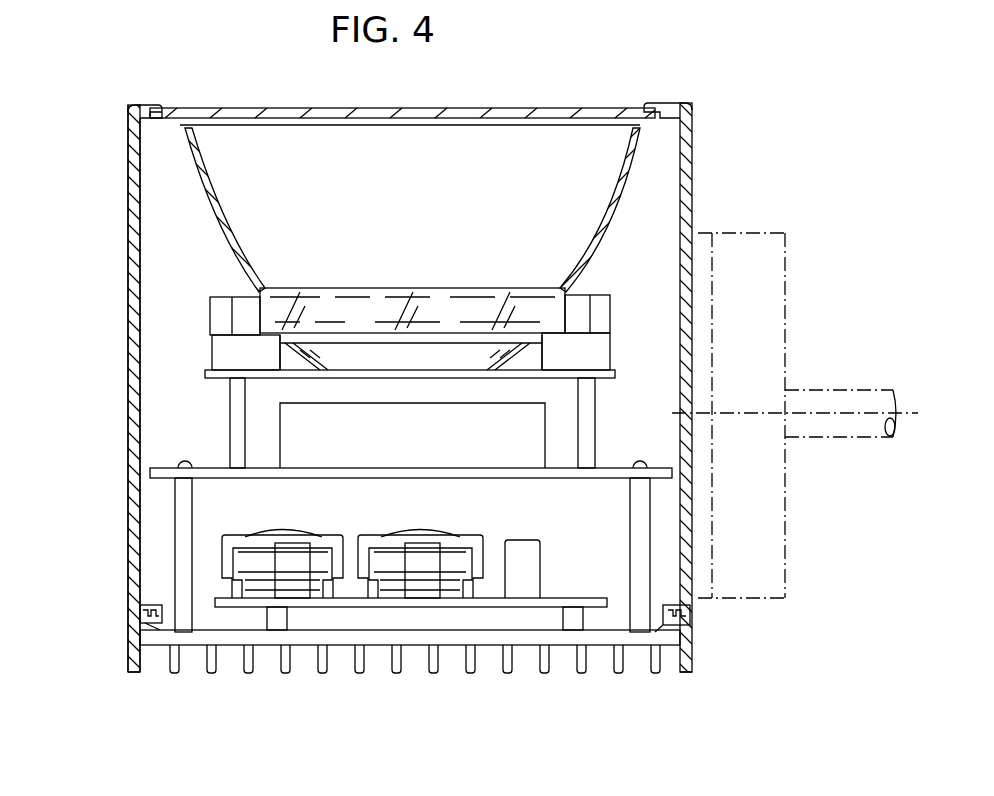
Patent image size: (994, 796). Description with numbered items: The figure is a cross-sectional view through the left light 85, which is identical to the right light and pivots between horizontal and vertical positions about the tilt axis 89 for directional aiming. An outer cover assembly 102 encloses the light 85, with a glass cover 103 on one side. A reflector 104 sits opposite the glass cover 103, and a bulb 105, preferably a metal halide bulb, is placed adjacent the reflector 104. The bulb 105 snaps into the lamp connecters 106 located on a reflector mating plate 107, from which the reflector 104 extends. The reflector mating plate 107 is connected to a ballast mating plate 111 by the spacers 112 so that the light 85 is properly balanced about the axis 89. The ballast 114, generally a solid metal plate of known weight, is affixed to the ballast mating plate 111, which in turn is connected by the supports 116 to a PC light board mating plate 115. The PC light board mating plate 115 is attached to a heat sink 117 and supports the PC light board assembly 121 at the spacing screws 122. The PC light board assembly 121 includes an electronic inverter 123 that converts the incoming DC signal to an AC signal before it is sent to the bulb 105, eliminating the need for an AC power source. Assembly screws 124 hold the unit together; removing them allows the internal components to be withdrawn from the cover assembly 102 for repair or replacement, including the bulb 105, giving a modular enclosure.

The left light 85 is at (118, 387).
The axis 89 is at (848, 412).
The outer cover assembly 102 is at (130, 507).
The glass cover 103 is at (582, 107).
The reflector 104 is at (600, 165).
The bulb 105 is at (495, 285).
The lamp connecters 106 is at (220, 350).
The reflector mating plate 107 is at (612, 372).
The ballast mating plate 111 is at (672, 476).
The spacers 112 is at (235, 410).
The ballast 114 is at (520, 442).
The PC light board mating plate 115 is at (625, 634).
The supports 116 is at (180, 545).
The heat sink 117 is at (355, 672).
The PC light board assembly 121 is at (595, 607).
The spacing screws 122 is at (280, 612).
The electronic inverter 123 is at (592, 527).
The assembly screws 124 is at (128, 622).